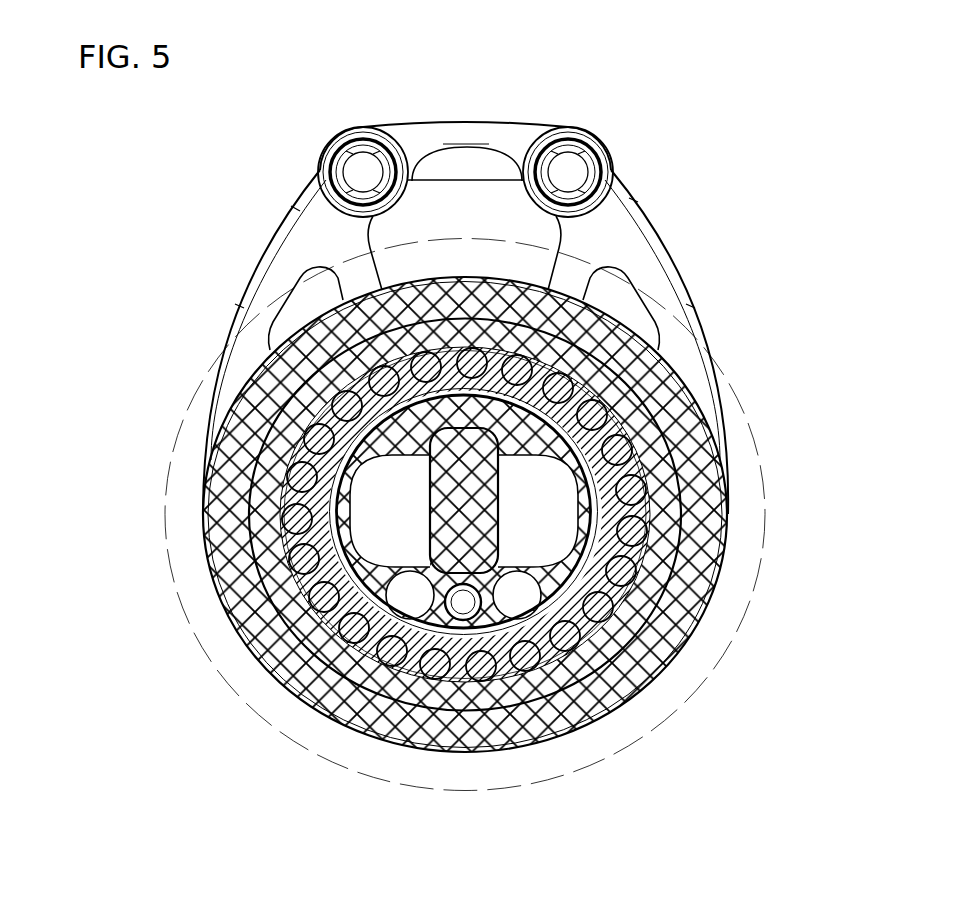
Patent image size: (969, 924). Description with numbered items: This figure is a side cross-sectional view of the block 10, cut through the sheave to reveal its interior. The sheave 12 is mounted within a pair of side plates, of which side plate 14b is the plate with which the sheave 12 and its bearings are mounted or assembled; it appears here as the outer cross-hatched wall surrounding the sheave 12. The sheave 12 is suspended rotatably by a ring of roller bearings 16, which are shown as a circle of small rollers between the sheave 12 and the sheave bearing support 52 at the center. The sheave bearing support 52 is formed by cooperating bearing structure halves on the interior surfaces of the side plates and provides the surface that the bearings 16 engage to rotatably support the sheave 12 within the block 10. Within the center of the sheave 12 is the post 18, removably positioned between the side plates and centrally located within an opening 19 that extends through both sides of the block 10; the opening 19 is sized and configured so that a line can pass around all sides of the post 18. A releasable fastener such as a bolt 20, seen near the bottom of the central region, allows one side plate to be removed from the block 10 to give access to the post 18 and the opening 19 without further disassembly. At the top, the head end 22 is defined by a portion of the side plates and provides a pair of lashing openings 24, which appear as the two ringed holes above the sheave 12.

The block 10 is at (606, 84).
The sheave 12 is at (240, 423).
The side plate 14b is at (203, 434).
The roller bearings 16 is at (300, 522).
The post 18 is at (437, 502).
The opening 19 is at (390, 475).
The bolt 20 is at (455, 618).
The head end 22 is at (417, 137).
The lashing openings 24 is at (357, 179).
The sheave bearing support 52 is at (522, 445).